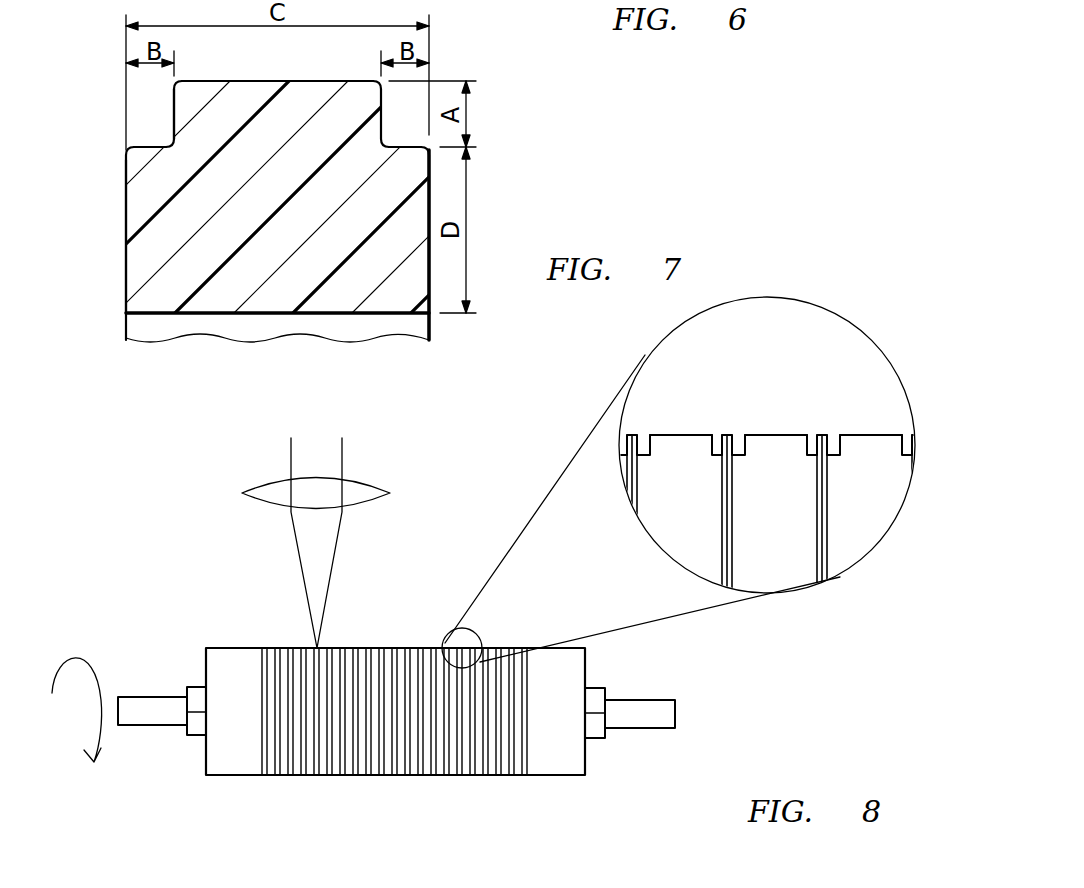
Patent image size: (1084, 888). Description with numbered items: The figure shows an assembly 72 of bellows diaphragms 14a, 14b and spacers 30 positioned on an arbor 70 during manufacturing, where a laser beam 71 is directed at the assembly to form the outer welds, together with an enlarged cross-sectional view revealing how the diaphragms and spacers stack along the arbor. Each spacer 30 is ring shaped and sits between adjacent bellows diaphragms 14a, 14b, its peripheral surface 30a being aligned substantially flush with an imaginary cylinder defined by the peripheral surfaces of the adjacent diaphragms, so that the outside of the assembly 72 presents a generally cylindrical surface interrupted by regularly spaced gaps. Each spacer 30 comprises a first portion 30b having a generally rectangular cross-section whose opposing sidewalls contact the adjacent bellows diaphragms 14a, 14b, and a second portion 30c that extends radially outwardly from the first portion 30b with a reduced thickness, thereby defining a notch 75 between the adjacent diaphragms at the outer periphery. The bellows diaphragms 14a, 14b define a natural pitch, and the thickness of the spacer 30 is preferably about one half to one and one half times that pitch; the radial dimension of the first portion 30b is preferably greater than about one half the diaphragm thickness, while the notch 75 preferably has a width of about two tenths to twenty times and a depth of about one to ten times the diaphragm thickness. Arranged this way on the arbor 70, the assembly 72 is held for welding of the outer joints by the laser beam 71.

In FIG. 6, the spacer 30 is at (465, 53).
In FIG. 7, the spacer 30 is at (668, 513).
In FIG. 6, the peripheral surface 30a is at (257, 81).
In FIG. 7, the peripheral surface 30a is at (678, 434).
In FIG. 6, the first portion 30b is at (126, 265).
In FIG. 6, the second portion 30c is at (174, 103).
In FIG. 6, the notch 75 is at (150, 128).
In FIG. 7, the bellows diaphragm 14a is at (722, 435).
In FIG. 7, the bellows diaphragm 14b is at (733, 435).
In FIG. 8, the arbor 70 is at (588, 668).
In FIG. 8, the laser beam 71 is at (334, 572).
In FIG. 7, the assembly 72 is at (860, 585).
In FIG. 8, the assembly 72 is at (314, 790).